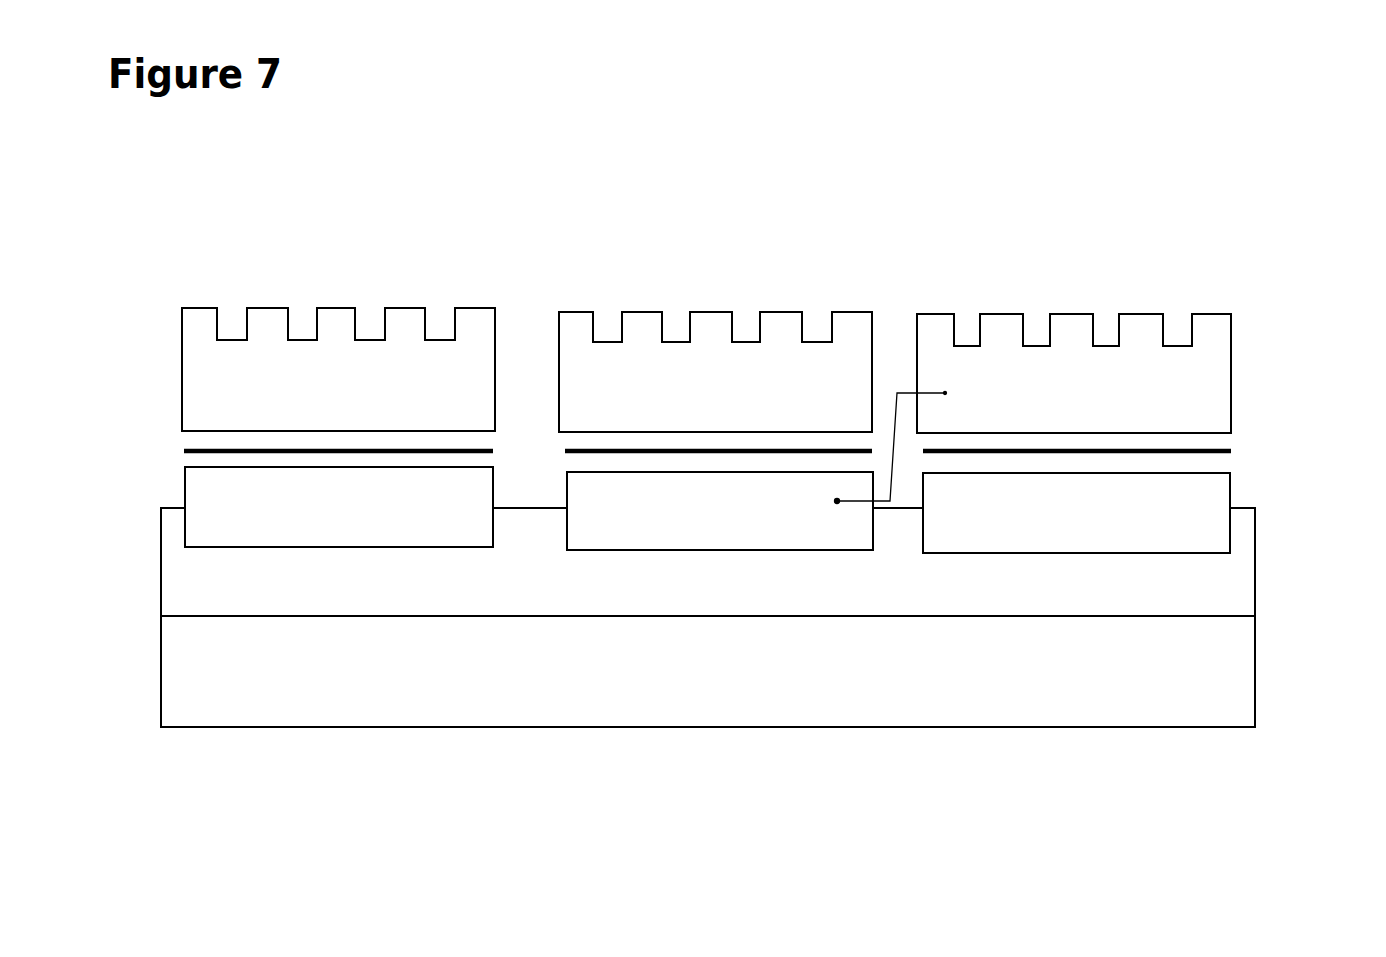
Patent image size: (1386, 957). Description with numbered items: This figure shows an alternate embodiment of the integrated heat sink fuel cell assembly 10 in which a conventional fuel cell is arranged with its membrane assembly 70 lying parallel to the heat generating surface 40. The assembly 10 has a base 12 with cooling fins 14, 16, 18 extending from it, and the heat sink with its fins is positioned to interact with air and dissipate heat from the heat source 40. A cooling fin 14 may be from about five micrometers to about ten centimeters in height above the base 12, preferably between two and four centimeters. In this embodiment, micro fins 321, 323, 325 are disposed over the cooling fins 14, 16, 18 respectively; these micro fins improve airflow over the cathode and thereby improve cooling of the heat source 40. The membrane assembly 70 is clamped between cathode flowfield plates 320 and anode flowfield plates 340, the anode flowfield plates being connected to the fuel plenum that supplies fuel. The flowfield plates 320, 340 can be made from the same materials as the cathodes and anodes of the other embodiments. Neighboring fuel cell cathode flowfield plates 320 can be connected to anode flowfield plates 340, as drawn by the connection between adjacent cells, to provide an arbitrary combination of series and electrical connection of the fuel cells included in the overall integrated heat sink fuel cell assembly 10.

The heat sink assembly 10 is at (145, 445).
The base 12 is at (1255, 564).
The cooling fin 14 is at (1230, 507).
The cooling fin 16 is at (652, 537).
The cooling fin 18 is at (313, 537).
The heat generating surface 40 is at (1077, 693).
The membrane assembly 70 is at (1233, 469).
The cathode flowfield plate 320 is at (1222, 403).
The micro fin 321 is at (1018, 314).
The micro fin 323 is at (718, 314).
The micro fin 325 is at (317, 308).
The anode flowfield plate 340 is at (788, 537).